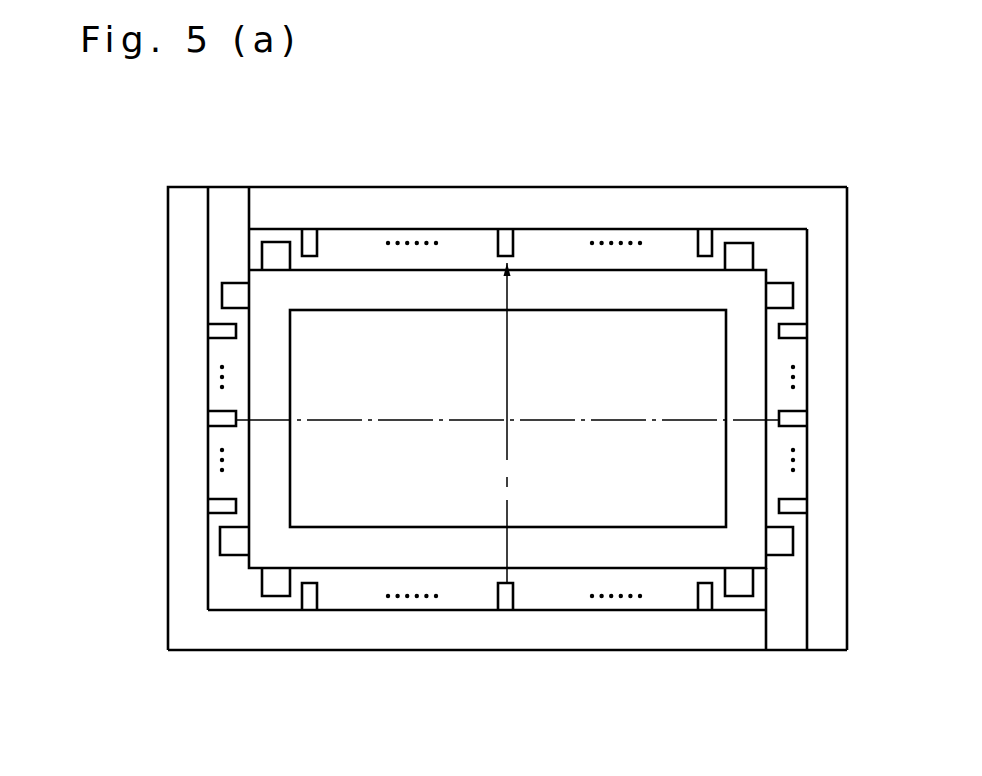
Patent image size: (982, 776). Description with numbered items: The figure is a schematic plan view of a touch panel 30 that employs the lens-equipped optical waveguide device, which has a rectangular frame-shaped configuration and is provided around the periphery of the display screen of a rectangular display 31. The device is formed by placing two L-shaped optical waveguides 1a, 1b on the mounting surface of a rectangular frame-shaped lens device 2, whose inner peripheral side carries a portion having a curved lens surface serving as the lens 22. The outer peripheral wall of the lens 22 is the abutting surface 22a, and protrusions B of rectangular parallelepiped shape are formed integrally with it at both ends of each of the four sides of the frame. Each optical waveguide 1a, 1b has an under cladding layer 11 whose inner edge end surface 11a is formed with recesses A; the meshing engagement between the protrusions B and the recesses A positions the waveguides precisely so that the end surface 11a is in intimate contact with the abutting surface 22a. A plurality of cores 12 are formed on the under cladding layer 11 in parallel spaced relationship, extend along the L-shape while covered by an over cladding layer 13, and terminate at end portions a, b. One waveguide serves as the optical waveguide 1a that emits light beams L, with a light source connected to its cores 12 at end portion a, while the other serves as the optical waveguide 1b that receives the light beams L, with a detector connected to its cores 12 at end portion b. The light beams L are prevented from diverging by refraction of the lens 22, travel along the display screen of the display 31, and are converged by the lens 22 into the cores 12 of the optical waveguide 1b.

The touch panel 30 is at (468, 663).
The end portion of optical waveguide 1a a is at (746, 652).
The end portion of optical waveguide 1b b is at (848, 641).
The over cladding layer 13 is at (183, 257).
The under cladding layer 11 is at (222, 352).
The cores 12 is at (208, 332).
The lens device 2 is at (550, 276).
The lens 22 is at (607, 285).
The abutting surface 22a is at (467, 272).
The end surface of under cladding layer 11a is at (398, 270).
The optical waveguide 1b is at (679, 236).
The optical waveguide 1a is at (683, 605).
The recesses A is at (209, 298).
The protrusions B is at (780, 298).
The display 31 is at (563, 490).
The light beams L is at (312, 418).